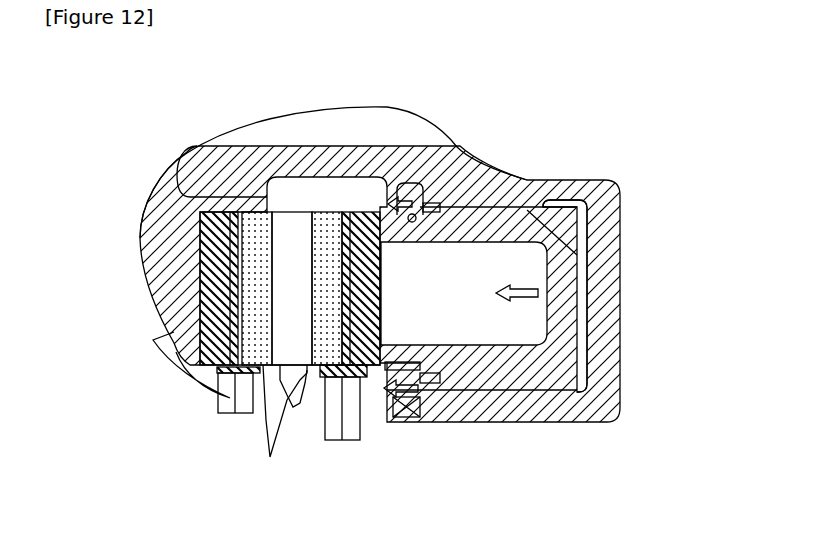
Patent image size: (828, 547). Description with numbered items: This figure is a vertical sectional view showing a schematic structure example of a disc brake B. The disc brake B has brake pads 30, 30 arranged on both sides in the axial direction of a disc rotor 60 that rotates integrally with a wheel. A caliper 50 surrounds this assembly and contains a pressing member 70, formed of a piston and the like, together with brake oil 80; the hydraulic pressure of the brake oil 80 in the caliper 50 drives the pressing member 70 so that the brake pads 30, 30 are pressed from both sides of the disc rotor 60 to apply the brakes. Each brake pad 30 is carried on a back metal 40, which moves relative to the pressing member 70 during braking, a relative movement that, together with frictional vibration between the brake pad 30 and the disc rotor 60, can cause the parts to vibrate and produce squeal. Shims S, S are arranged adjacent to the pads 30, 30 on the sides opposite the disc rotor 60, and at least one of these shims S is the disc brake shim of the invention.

The brake pad 30 is at (270, 457).
The back metal 40 is at (221, 393).
The caliper 50 is at (437, 183).
The disc rotor 60 is at (293, 224).
The pressing member 70 is at (525, 215).
The brake oil 80 is at (574, 373).
The shim S is at (200, 254).
The disc brake B is at (82, 114).